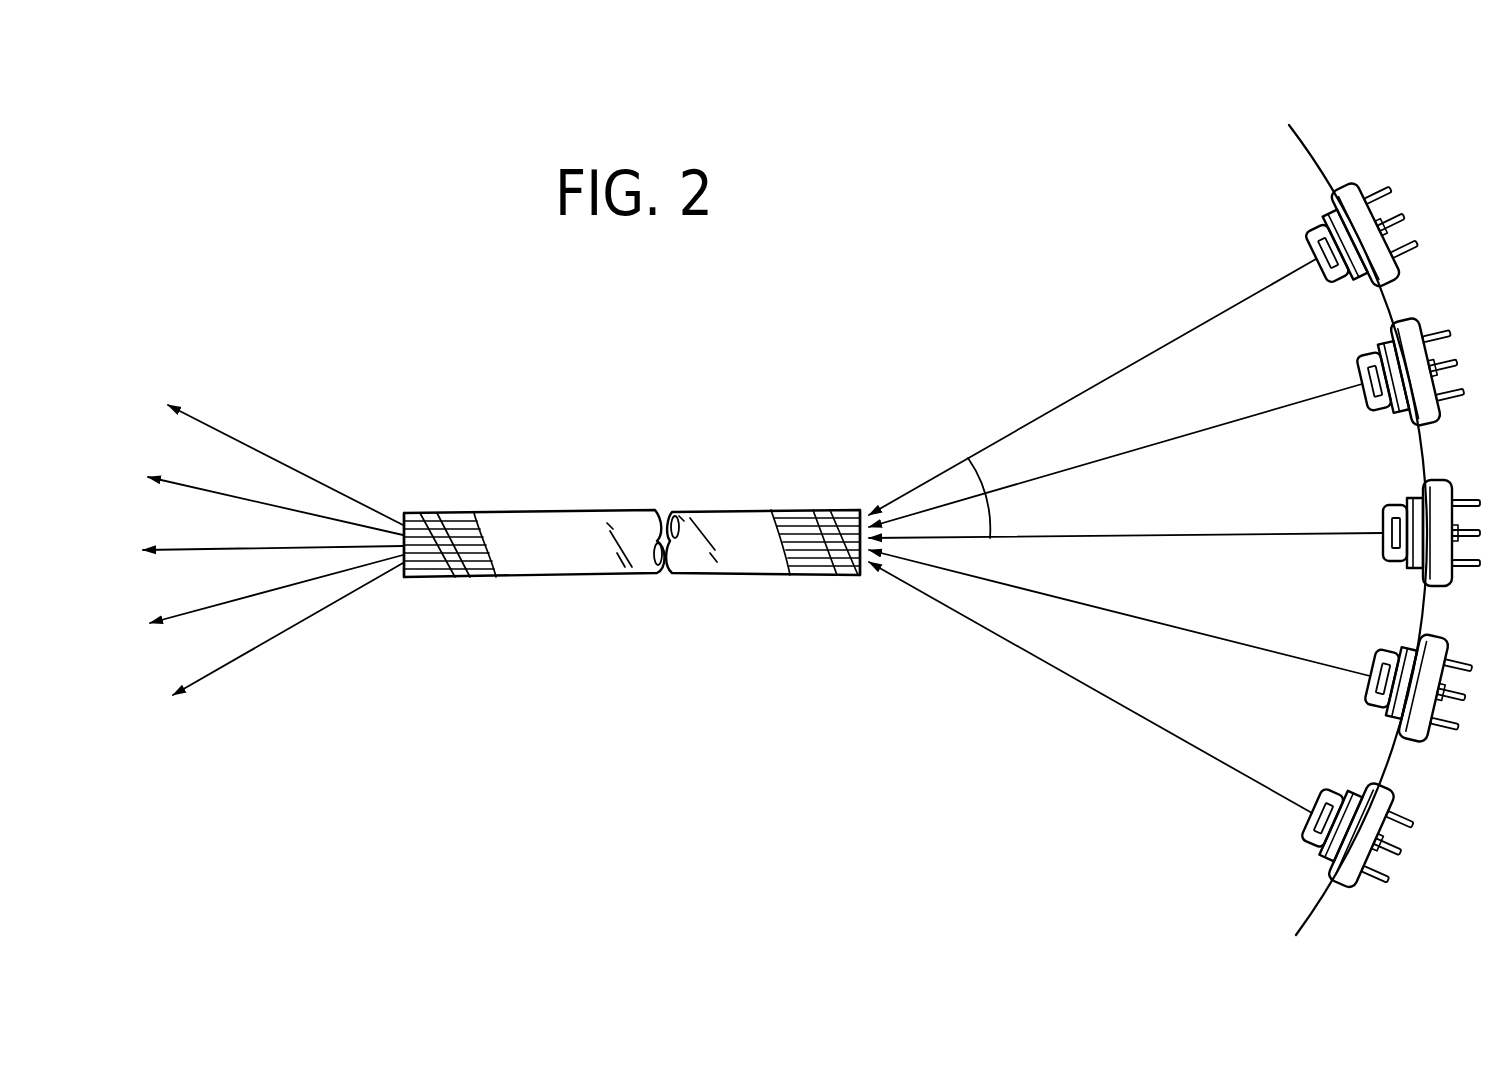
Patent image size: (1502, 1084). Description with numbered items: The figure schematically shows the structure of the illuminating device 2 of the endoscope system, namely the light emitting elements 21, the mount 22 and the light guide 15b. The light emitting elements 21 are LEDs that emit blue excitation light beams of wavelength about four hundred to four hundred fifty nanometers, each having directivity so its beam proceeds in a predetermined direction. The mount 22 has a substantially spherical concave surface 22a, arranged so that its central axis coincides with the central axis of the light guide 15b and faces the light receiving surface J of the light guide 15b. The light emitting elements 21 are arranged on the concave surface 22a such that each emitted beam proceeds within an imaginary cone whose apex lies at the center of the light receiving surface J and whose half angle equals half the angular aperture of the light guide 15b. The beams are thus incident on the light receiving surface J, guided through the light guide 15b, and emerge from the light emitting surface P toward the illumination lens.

The illuminating device 2 is at (762, 729).
The light guide 15b is at (708, 510).
The light emitting element 21 is at (1352, 182).
The mount 22 is at (1297, 530).
The concave surface 22a is at (1311, 158).
The light emitting surface P is at (404, 518).
The light receiving surface J is at (869, 512).